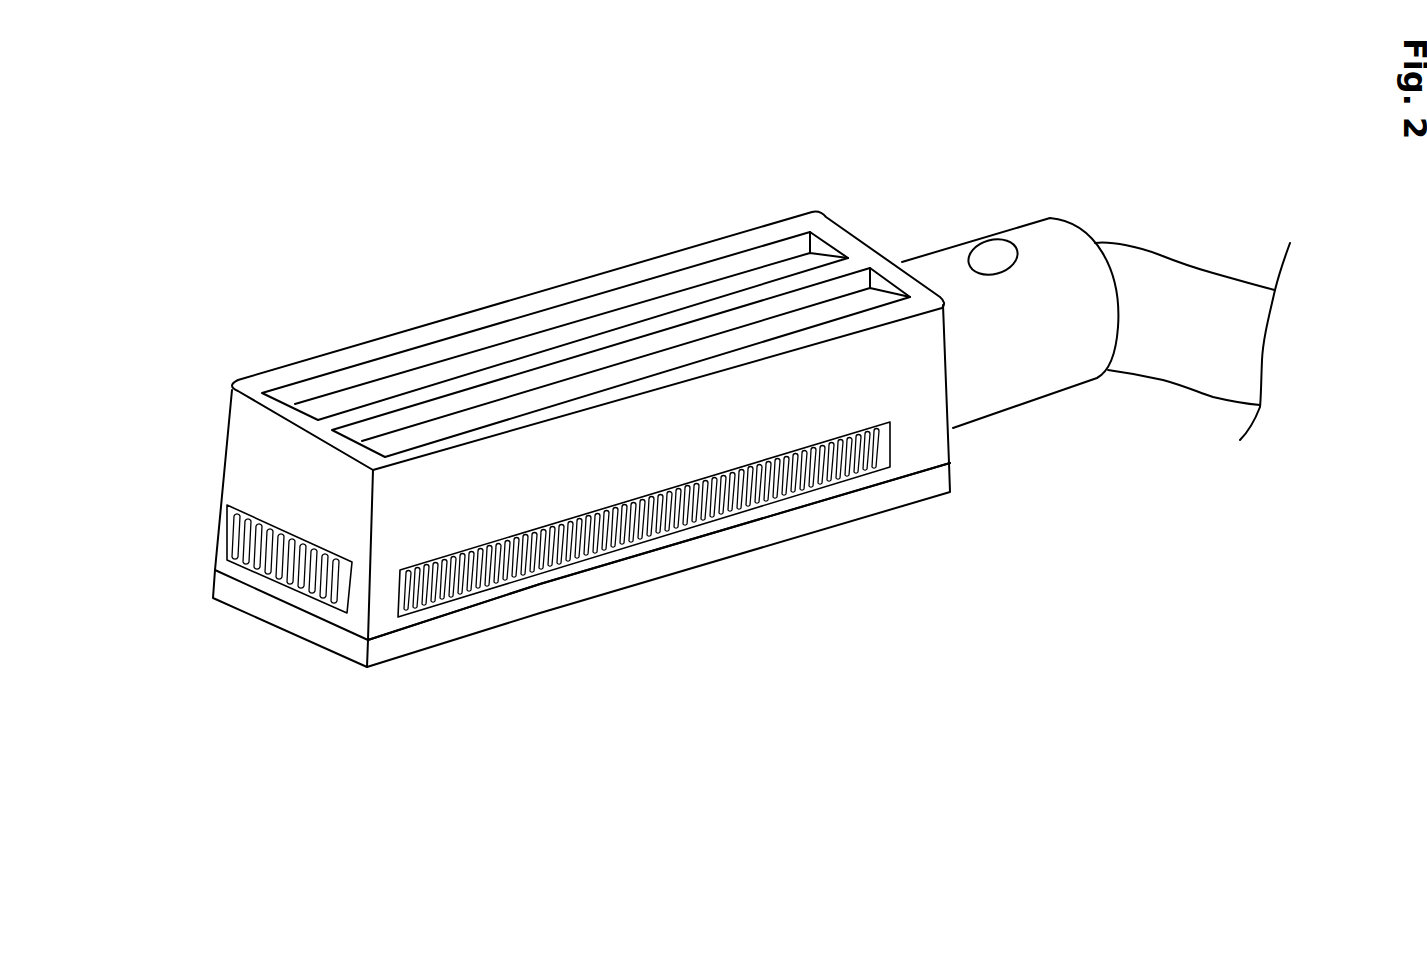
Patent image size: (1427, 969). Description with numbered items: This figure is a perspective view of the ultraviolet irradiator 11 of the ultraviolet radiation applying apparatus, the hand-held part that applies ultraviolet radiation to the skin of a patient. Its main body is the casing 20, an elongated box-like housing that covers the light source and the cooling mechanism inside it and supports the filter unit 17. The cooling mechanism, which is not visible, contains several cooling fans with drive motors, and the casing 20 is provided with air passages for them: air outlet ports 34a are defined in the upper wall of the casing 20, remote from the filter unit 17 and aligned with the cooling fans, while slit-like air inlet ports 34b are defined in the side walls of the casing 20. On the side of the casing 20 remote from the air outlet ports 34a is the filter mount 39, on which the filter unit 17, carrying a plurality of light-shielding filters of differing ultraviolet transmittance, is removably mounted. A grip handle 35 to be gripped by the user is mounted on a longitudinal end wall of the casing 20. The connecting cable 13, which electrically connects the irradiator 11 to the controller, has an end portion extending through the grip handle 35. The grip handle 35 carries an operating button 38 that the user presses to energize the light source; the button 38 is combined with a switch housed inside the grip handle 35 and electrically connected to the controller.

The ultraviolet irradiator 11 is at (1052, 770).
The connecting cable 13 is at (1162, 263).
The filter unit 17 is at (317, 632).
The casing 20 is at (240, 463).
The air outlet ports 34a is at (412, 415).
The air inlet ports 34b is at (742, 494).
The grip handle 35 is at (1033, 232).
The operating button 38 is at (990, 258).
The filter mount 39 is at (560, 590).